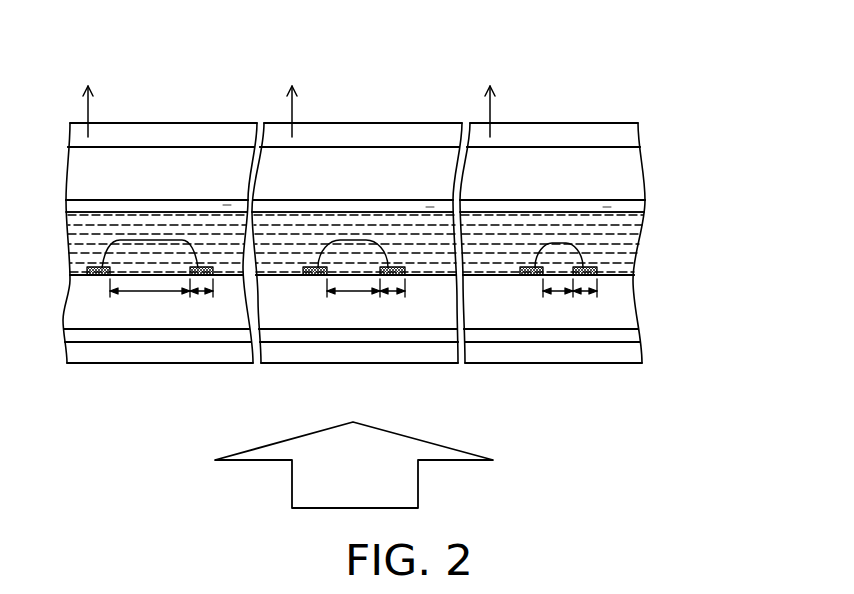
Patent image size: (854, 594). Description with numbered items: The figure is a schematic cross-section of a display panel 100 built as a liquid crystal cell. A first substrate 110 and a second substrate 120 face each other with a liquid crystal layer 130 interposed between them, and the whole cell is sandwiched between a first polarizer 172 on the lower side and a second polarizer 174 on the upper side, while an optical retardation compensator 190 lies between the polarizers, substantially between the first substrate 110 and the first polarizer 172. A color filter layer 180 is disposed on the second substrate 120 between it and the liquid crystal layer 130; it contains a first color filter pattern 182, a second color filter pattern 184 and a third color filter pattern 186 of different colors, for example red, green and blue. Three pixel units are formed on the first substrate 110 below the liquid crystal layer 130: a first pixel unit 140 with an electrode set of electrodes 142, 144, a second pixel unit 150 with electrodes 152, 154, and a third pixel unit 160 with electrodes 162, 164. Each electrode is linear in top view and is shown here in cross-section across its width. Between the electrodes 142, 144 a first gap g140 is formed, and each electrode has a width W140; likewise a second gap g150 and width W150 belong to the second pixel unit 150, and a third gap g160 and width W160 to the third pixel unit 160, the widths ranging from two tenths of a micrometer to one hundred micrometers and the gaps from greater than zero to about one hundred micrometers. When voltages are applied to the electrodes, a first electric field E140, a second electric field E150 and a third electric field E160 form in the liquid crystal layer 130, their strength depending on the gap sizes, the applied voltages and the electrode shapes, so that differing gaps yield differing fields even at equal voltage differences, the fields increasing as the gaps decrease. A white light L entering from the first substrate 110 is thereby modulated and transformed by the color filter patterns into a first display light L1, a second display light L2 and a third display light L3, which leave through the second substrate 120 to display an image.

The display panel 100 is at (748, 472).
The first substrate 110 is at (628, 296).
The second substrate 120 is at (630, 183).
The liquid crystal layer 130 is at (613, 235).
The first pixel unit 140 is at (555, 141).
The electrode 142 is at (525, 267).
The electrode 144 is at (588, 267).
The first electric field E140 is at (558, 243).
The second pixel unit 150 is at (354, 141).
The electrode 152 is at (308, 267).
The electrode 154 is at (392, 267).
The second electric field E150 is at (358, 240).
The third pixel unit 160 is at (150, 141).
The electrode 162 is at (92, 267).
The electrode 164 is at (203, 267).
The third electric field E160 is at (157, 239).
The first polarizer 172 is at (620, 352).
The second polarizer 174 is at (625, 142).
The color filter layer 180 is at (643, 203).
The first color filter pattern 182 is at (607, 207).
The second color filter pattern 184 is at (429, 207).
The third color filter pattern 186 is at (227, 204).
The optical retardation compensator 190 is at (627, 336).
The first gap g140 is at (560, 297).
The width W140 is at (585, 297).
The second gap g150 is at (355, 297).
The width W150 is at (393, 297).
The third gap g160 is at (140, 297).
The width W160 is at (203, 297).
The white light L is at (397, 487).
The first display light L1 is at (490, 107).
The second display light L2 is at (292, 107).
The third display light L3 is at (88, 107).